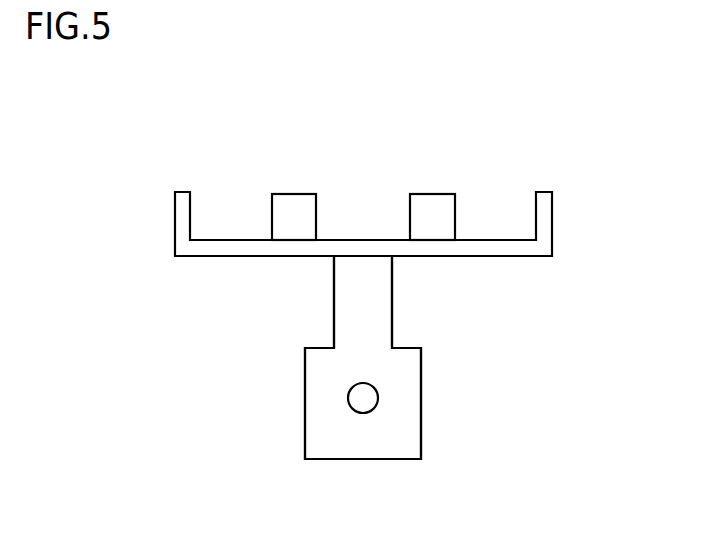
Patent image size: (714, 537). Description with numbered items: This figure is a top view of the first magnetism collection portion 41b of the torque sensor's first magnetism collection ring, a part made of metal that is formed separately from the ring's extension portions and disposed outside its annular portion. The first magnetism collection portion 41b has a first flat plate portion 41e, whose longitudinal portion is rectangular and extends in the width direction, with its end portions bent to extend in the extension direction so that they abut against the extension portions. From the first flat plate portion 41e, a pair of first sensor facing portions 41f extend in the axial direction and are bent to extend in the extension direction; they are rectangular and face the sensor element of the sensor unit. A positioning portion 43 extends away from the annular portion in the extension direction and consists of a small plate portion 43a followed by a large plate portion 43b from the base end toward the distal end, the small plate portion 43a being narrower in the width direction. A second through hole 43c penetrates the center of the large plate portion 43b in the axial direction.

The first magnetism collection portion 41b is at (553, 153).
The first flat plate portion 41e is at (497, 246).
The first sensor facing portions 41f is at (428, 194).
The positioning portion 43 is at (511, 309).
The small plate portion 43a is at (383, 321).
The large plate portion 43b is at (417, 358).
The second through hole 43c is at (372, 400).